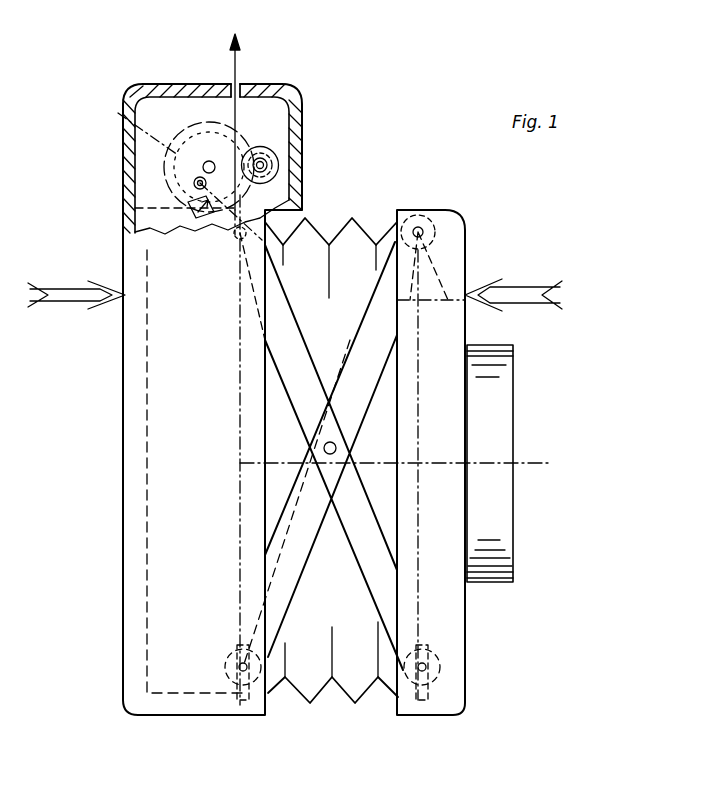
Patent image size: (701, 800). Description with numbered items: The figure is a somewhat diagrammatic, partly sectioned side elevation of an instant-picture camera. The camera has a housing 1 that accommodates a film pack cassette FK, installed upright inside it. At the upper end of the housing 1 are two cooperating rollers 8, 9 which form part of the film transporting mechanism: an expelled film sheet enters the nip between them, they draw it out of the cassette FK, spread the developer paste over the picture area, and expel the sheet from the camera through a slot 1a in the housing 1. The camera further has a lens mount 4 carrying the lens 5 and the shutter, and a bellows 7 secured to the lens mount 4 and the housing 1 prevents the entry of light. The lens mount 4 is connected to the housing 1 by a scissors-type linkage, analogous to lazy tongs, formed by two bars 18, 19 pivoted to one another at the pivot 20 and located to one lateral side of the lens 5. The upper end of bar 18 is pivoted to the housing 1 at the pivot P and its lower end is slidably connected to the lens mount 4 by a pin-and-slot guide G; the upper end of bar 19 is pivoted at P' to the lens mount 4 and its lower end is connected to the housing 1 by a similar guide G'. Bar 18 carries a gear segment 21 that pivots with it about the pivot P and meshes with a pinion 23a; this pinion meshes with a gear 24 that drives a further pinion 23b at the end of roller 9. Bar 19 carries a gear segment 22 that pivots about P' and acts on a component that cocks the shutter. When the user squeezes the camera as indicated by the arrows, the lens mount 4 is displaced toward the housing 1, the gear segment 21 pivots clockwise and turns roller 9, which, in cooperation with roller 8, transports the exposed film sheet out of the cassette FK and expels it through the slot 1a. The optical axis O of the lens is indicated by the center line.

The housing 1 is at (122, 213).
The slot 1a is at (247, 92).
The lens mount 4 is at (455, 660).
The lens 5 is at (508, 528).
The bellows 7 is at (358, 220).
The roller 8 is at (172, 141).
The roller 9 is at (273, 150).
The bar 18 is at (300, 376).
The bar 19 is at (280, 590).
The pivot 20 is at (337, 448).
The gear segment 21 is at (212, 218).
The gear segment 22 is at (440, 268).
The pinion 23a is at (190, 181).
The pinion 23b is at (277, 165).
The gear 24 is at (201, 134).
The pivot P is at (233, 283).
The pivot P' is at (433, 208).
The pin-and-slot guide G is at (407, 698).
The pin-and-slot guide G' is at (236, 702).
The axis O is at (535, 458).
The film pack cassette FK is at (147, 408).